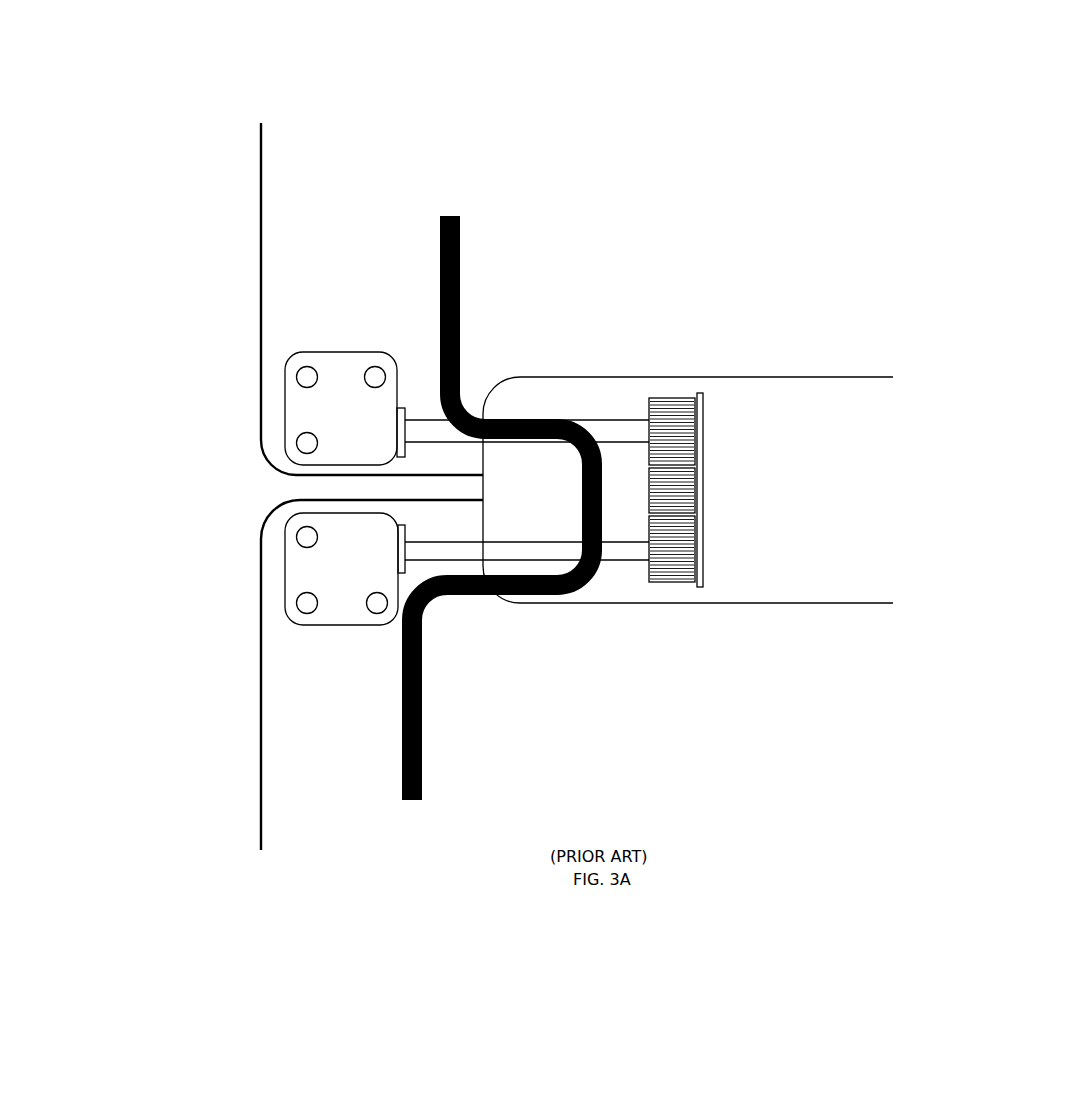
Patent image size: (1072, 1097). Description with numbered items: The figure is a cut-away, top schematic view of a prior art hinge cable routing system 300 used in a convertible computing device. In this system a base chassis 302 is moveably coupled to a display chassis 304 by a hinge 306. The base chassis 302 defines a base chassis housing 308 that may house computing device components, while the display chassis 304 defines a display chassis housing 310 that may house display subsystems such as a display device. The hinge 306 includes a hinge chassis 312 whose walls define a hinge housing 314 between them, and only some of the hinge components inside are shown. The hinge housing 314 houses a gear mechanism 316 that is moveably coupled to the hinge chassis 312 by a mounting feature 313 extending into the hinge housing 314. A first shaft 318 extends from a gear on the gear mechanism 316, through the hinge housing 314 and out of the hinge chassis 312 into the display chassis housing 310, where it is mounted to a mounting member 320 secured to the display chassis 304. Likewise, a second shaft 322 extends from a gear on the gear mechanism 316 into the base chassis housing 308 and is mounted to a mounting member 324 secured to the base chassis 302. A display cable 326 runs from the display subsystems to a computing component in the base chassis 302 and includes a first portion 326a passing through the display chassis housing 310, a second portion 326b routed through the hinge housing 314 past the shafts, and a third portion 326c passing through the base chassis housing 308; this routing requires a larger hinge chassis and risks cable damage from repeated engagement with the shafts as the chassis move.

The prior art hinge cable routing system 300 is at (127, 200).
The base chassis 302 is at (261, 715).
The display chassis 304 is at (261, 273).
The hinge 306 is at (905, 492).
The base chassis housing 308 is at (628, 744).
The display chassis housing 310 is at (630, 272).
The hinge chassis 312 is at (733, 377).
The mounting feature 313 is at (703, 488).
The hinge housing 314 is at (782, 492).
The gear mechanism 316 is at (673, 398).
The first shaft 318 is at (612, 430).
The mounting member 320 is at (338, 363).
The second shaft 322 is at (623, 550).
The mounting member 324 is at (340, 603).
The display cable 326 is at (485, 242).
The first portion 326a is at (438, 292).
The second portion 326b is at (580, 500).
The third portion 326c is at (420, 730).